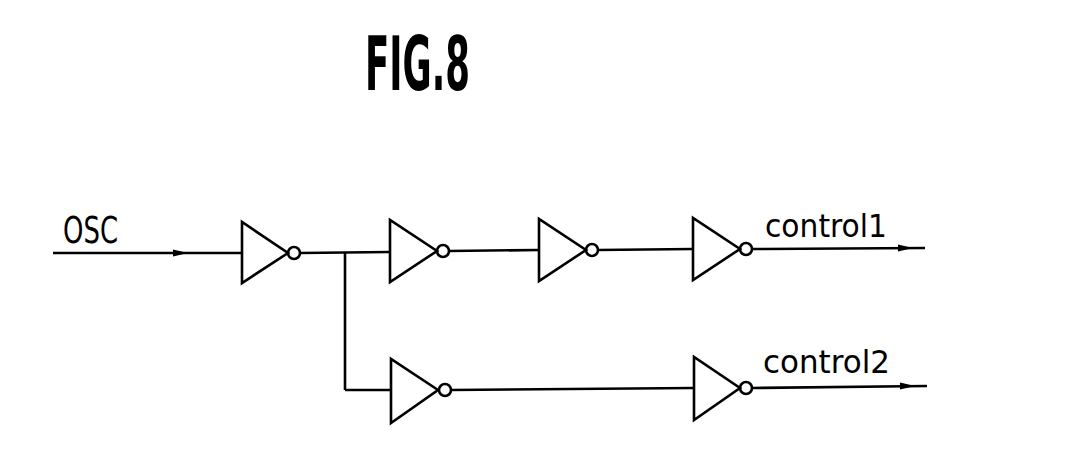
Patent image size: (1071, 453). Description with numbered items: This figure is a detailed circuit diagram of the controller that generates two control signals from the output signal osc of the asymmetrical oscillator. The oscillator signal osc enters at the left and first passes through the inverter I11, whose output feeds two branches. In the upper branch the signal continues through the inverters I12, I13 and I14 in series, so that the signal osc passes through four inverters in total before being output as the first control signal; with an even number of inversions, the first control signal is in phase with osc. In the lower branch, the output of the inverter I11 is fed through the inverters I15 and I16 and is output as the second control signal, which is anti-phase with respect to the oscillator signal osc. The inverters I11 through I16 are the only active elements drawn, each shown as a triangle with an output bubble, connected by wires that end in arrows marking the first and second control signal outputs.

The inverter I11 is at (272, 238).
The inverter I12 is at (421, 234).
The inverter I13 is at (568, 233).
The inverter I14 is at (722, 231).
The inverter I15 is at (421, 375).
The inverter I16 is at (723, 369).